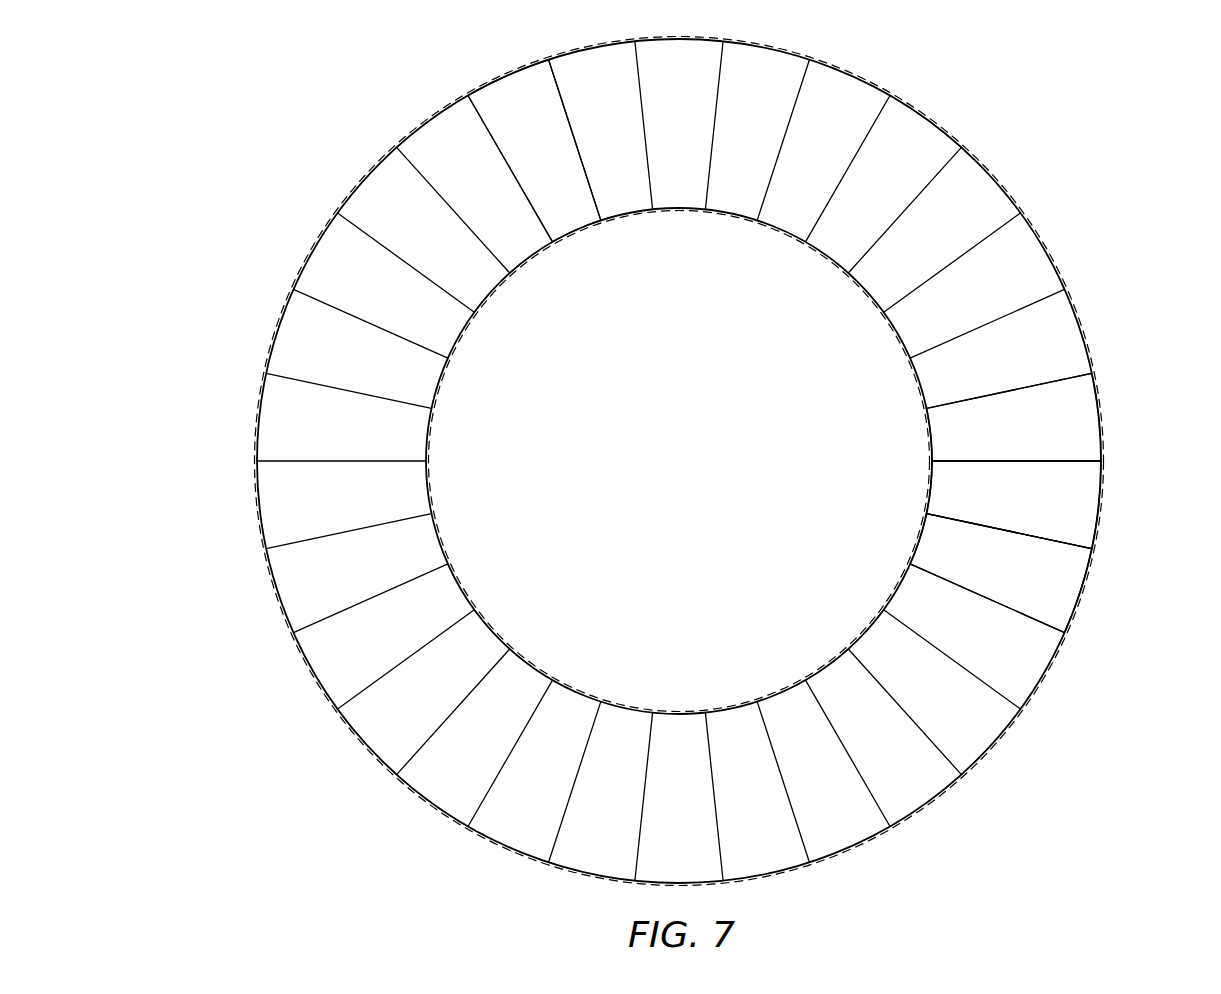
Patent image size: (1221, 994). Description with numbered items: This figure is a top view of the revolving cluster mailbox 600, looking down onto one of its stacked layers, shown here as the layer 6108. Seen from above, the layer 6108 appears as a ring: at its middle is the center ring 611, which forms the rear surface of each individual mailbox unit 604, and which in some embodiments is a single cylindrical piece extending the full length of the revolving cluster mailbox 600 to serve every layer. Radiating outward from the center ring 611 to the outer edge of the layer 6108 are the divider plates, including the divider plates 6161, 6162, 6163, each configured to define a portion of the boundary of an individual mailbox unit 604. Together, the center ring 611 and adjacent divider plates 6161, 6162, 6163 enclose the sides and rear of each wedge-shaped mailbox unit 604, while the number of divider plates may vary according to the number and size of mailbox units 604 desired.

The revolving cluster mailbox 600 is at (248, 250).
The individual mailbox unit 604 is at (1063, 342).
The center ring 611 is at (786, 228).
The layer 6108 is at (502, 70).
The divider plate 6161 is at (1070, 443).
The divider plate 6162 is at (1070, 508).
The divider plate 6163 is at (1038, 582).